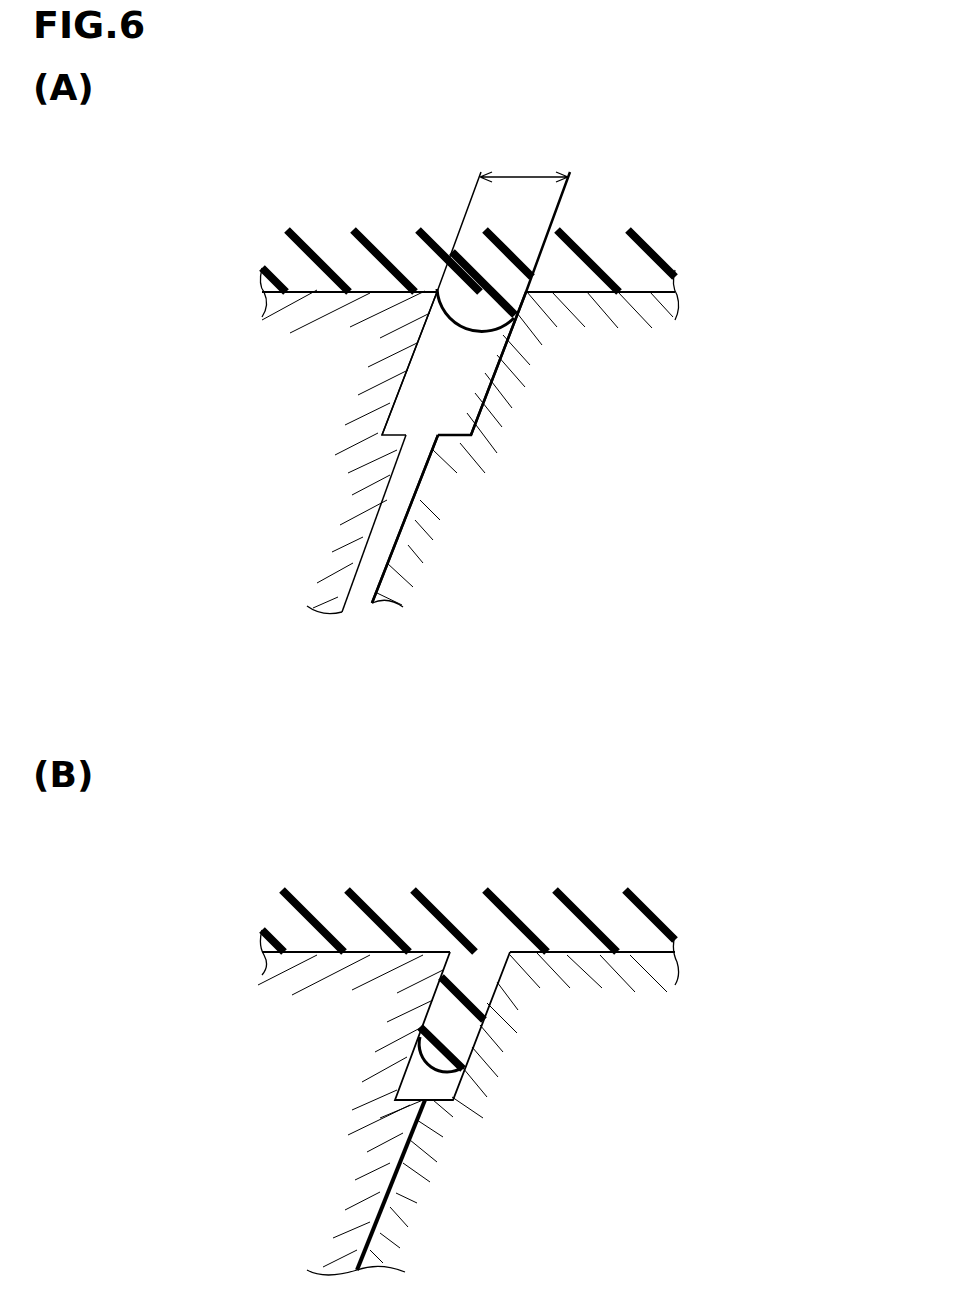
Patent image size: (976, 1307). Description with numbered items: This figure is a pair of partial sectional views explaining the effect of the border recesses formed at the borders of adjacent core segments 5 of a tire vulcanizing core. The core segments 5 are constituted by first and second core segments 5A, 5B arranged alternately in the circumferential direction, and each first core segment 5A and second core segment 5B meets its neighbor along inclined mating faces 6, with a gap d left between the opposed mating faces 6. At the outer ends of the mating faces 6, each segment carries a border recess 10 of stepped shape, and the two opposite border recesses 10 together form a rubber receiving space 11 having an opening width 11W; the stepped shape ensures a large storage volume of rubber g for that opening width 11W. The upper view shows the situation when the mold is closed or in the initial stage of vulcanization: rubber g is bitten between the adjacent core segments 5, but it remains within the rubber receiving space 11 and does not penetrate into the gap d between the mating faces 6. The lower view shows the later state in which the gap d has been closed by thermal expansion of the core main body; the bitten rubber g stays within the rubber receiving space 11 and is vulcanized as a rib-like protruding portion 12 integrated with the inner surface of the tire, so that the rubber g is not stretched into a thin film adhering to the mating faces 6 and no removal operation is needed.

The core segment 5 is at (458, 767).
The first core segment 5A is at (316, 486).
The second core segment 5B is at (596, 502).
The mating face 6 is at (378, 512).
The border recess 10 is at (412, 347).
The rubber receiving space 11 is at (478, 400).
The opening width 11W is at (524, 157).
The rib-like protruding portion 12 is at (473, 1055).
The rubber g is at (482, 316).
The gap d is at (378, 563).